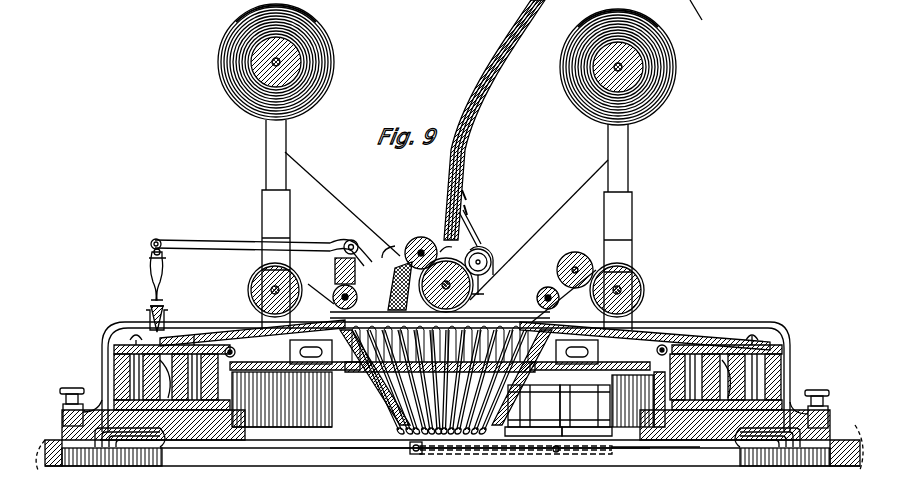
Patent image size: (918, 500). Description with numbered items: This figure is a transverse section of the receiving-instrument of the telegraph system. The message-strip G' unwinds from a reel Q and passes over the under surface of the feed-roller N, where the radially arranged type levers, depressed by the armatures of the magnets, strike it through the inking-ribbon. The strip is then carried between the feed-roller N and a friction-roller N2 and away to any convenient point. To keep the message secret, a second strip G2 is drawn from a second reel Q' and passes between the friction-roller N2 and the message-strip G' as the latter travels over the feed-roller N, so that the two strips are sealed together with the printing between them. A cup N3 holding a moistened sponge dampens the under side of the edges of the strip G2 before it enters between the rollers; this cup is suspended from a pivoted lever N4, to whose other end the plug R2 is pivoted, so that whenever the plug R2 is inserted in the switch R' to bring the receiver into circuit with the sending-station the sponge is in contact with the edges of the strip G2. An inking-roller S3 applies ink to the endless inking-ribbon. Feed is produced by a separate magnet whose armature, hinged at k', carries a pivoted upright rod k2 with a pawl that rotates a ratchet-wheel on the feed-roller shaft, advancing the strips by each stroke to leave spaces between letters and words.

The reel Q is at (628, 169).
The reel Q' is at (285, 167).
The message-strip G' is at (539, 230).
The second strip G2 is at (342, 204).
The feed-roller N is at (456, 279).
The friction-roller N2 is at (417, 247).
The cup N3 is at (393, 286).
The lever N4 is at (261, 252).
The switch R' is at (165, 315).
The plug R2 is at (166, 277).
The inking-roller S3 is at (575, 261).
The armature hinge k' is at (624, 457).
The upright rod k2 is at (502, 443).